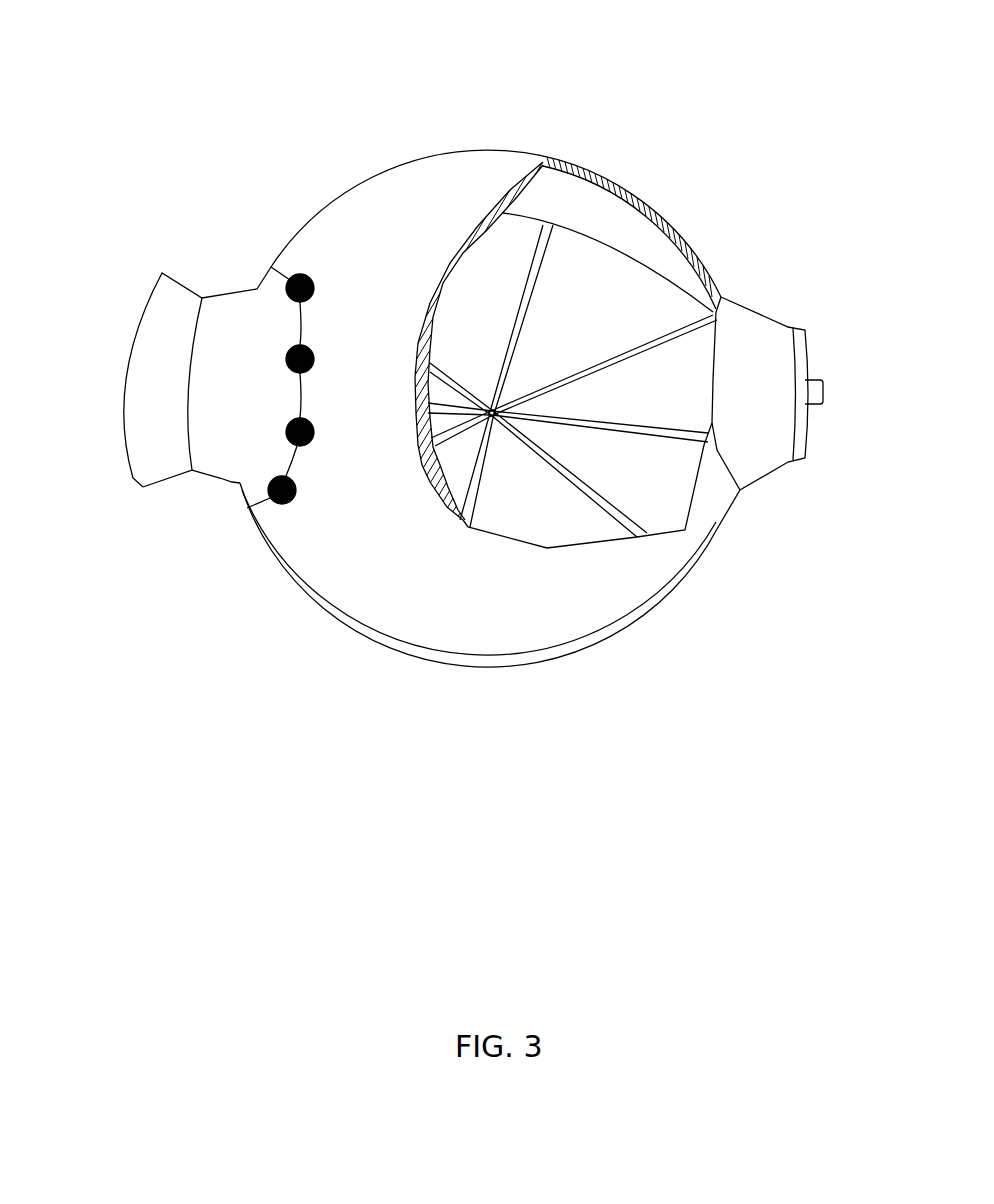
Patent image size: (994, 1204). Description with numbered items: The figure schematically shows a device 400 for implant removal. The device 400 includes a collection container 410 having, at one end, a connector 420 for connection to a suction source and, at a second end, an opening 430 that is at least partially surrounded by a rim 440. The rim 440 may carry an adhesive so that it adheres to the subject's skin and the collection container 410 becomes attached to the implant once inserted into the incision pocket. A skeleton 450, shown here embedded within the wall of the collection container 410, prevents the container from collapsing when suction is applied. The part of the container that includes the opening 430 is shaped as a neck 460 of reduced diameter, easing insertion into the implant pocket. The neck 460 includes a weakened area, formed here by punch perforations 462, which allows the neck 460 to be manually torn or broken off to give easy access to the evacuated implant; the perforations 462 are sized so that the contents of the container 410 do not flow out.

The device for implant removal 400 is at (545, 86).
The collection container 410 is at (455, 593).
The connector 420 is at (788, 465).
The opening 430 is at (128, 377).
The rim 440 is at (140, 484).
The skeleton 450 is at (538, 297).
The neck 460 is at (222, 477).
The punch perforations 462 is at (279, 505).